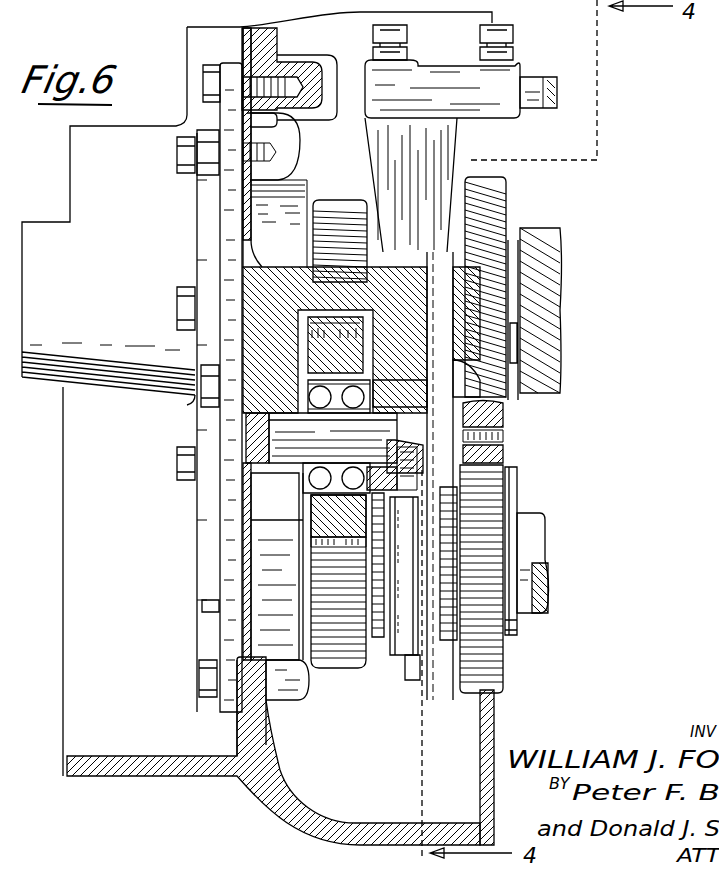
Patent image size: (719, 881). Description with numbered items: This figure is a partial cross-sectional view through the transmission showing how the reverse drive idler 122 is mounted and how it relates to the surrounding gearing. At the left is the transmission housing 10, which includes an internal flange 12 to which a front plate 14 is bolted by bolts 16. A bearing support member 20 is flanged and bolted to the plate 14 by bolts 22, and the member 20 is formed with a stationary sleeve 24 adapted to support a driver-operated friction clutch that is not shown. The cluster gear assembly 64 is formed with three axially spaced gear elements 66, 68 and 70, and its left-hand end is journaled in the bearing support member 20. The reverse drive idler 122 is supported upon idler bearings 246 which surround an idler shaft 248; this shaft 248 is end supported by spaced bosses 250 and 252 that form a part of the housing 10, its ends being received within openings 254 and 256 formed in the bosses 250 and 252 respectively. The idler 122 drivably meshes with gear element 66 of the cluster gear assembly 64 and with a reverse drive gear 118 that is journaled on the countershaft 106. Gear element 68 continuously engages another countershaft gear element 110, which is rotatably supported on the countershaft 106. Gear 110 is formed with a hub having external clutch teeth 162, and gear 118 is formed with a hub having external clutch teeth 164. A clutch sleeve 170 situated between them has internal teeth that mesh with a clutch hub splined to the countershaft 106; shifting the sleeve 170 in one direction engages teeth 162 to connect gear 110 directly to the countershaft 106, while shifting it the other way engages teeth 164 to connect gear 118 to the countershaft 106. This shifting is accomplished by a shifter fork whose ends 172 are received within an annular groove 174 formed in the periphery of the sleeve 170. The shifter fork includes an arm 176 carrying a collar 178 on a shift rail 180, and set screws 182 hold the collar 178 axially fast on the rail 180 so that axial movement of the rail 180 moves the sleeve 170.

The transmission housing 10 is at (237, 795).
The internal flange 12 is at (233, 722).
The front plate 14 is at (217, 581).
The bolts 16 is at (211, 82).
The bearing support member 20 is at (240, 230).
The bolts 22 is at (187, 152).
The stationary sleeve 24 is at (100, 223).
The cluster gear assembly 64 is at (433, 245).
The gear element 66 is at (340, 207).
The gear element 68 is at (507, 200).
The gear element 70 is at (565, 241).
The countershaft 106 is at (563, 500).
The countershaft gear element 110 is at (520, 490).
The reverse drive gear 118 is at (217, 613).
The reverse drive idler 122 is at (241, 513).
The external clutch teeth 162 is at (505, 653).
The external clutch teeth 164 is at (374, 670).
The clutch sleeve 170 is at (433, 697).
The shifter fork ends 172 is at (378, 627).
The annular groove 174 is at (413, 667).
The shifter fork arm 176 is at (455, 148).
The collar 178 is at (505, 88).
The shift rail 180 is at (570, 70).
The set screws 182 is at (513, 32).
The idler bearings 246 is at (241, 493).
The idler shaft 248 is at (197, 430).
The boss 250 is at (240, 332).
The boss 252 is at (503, 397).
The opening 254 is at (192, 413).
The opening 256 is at (503, 423).